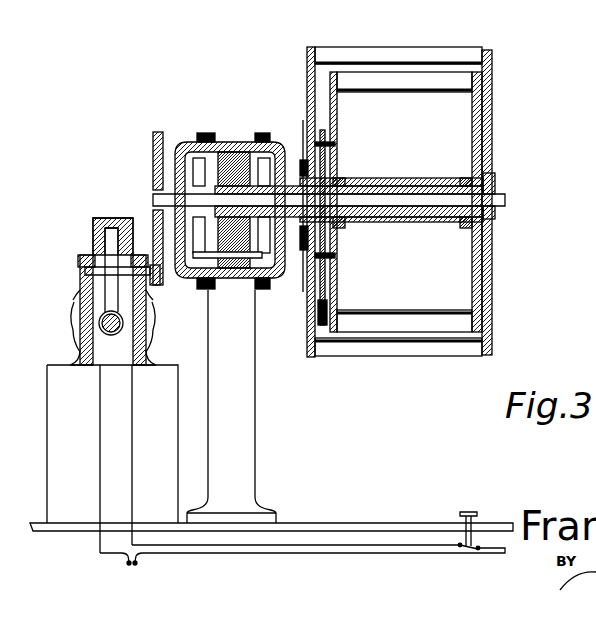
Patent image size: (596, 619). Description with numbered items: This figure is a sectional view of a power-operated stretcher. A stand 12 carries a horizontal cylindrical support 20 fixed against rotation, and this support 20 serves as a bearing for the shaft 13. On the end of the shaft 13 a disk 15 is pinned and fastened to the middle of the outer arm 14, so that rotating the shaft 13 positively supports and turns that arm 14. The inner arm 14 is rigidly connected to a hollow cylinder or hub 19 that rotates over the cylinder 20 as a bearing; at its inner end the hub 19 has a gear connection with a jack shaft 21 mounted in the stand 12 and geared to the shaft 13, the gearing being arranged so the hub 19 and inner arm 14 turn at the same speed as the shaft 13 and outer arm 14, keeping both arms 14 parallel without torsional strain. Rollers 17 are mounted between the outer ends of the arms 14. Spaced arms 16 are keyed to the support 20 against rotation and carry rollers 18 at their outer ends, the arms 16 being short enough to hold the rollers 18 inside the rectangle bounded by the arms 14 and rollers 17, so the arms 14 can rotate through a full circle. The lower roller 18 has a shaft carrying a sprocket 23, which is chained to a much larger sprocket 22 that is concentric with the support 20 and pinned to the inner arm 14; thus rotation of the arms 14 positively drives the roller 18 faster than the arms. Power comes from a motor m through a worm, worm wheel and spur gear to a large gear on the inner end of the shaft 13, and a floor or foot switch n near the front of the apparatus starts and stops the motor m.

The stand 12 is at (220, 143).
The shaft 13 is at (368, 195).
The arm 14 is at (310, 85).
The disk 15 is at (489, 187).
The spaced arm 16 is at (476, 262).
The roller 17 is at (443, 53).
The roller 18 is at (400, 93).
The hub 19 is at (296, 223).
The cylindrical support 20 is at (395, 218).
The jack shaft 21 is at (228, 280).
The sprocket 22 is at (326, 158).
The sprocket 23 is at (323, 322).
The motor m is at (72, 318).
The foot switch n is at (466, 512).